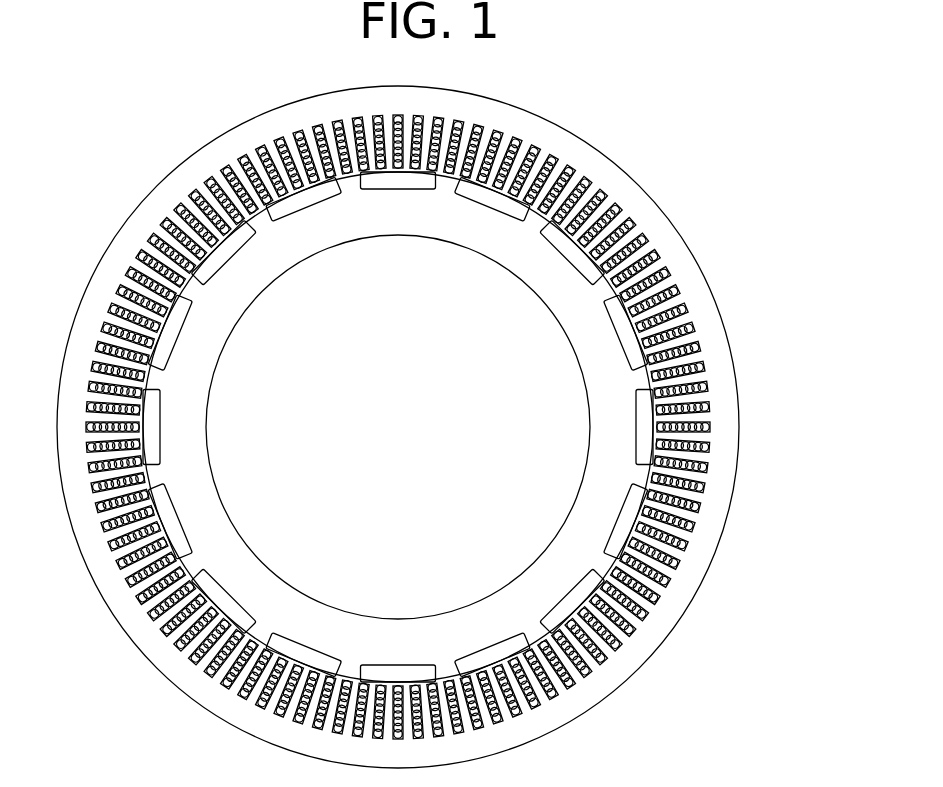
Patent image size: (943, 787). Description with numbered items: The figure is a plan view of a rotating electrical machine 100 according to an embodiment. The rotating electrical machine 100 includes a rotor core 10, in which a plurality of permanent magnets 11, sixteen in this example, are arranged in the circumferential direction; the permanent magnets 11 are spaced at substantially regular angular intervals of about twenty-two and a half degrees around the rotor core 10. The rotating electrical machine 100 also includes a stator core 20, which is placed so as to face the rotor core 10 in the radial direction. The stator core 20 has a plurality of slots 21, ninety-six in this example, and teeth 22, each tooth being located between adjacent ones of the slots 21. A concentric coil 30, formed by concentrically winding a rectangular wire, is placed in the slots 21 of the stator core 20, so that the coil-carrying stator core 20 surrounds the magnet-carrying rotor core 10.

The rotating electrical machine 100 is at (684, 140).
The rotor core 10 is at (487, 243).
The permanent magnet 11 is at (575, 257).
The stator core 20 is at (682, 261).
The slot 21 is at (670, 310).
The tooth 22 is at (667, 327).
The concentric coil 30 is at (714, 408).